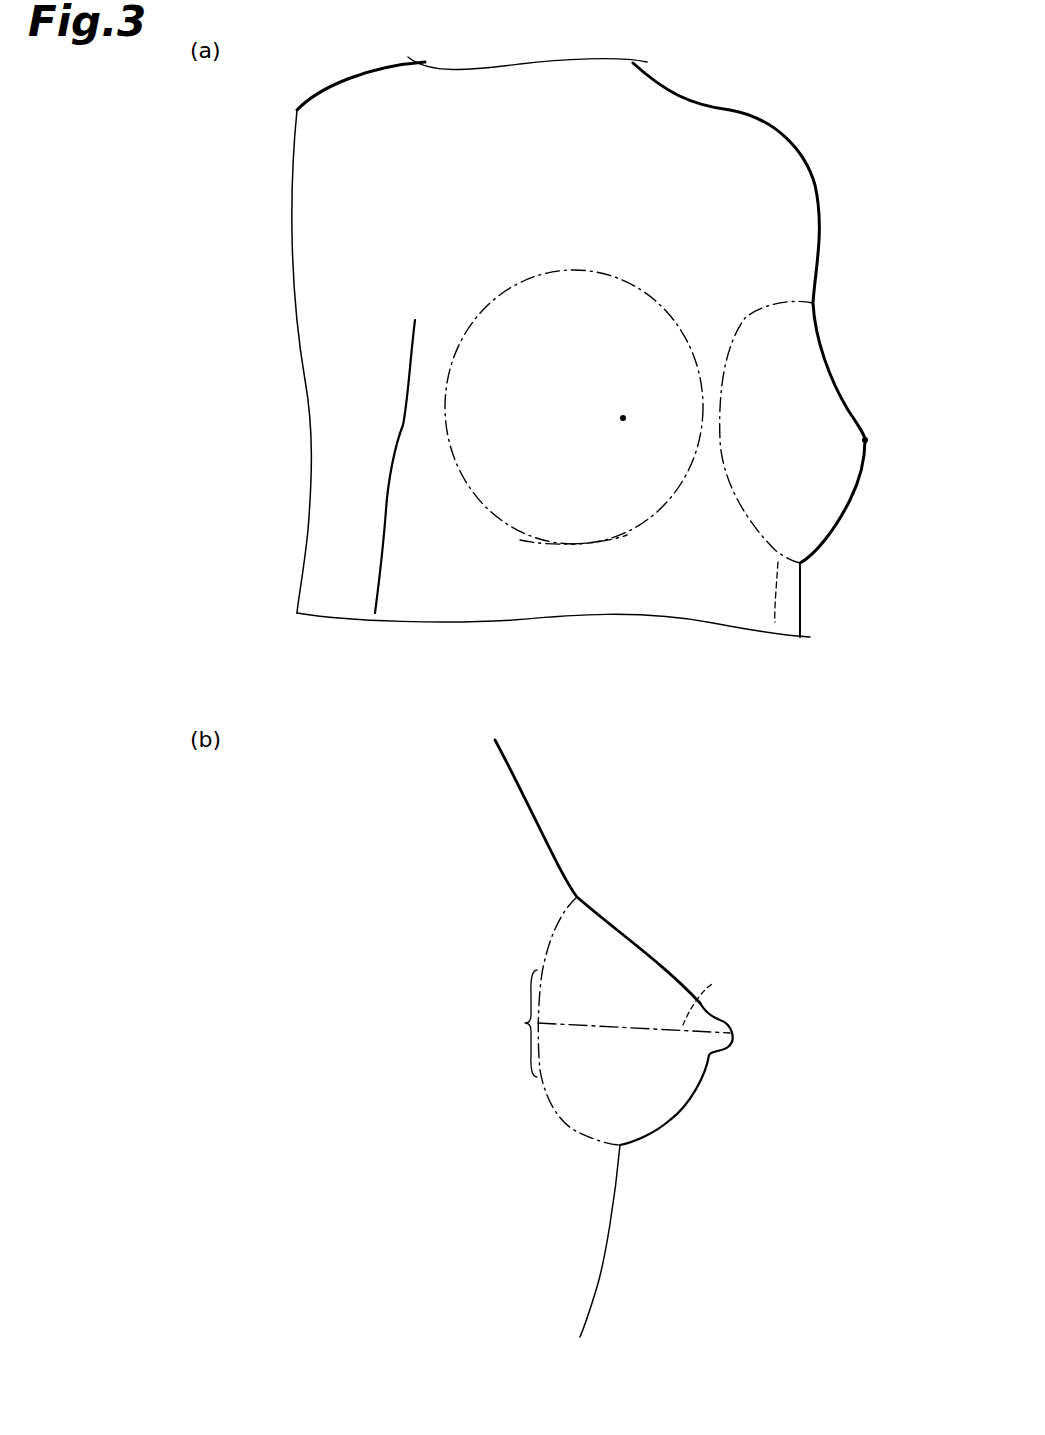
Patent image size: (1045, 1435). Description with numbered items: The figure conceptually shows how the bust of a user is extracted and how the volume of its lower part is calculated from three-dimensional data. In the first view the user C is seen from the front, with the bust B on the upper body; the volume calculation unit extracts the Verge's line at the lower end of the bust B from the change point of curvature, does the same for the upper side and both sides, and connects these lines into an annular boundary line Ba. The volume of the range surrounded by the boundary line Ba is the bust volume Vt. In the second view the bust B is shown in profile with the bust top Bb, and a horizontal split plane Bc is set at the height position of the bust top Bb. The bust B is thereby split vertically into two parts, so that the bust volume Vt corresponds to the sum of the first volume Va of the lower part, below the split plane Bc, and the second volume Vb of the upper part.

The user C is at (824, 86).
The bust B is at (520, 515).
The annular boundary line Ba is at (557, 547).
The bust top Bb is at (621, 424).
The split plane Bc is at (709, 986).
The bust volume Vt is at (512, 1023).
The second volume Vb is at (586, 1014).
The first volume Va is at (586, 1074).